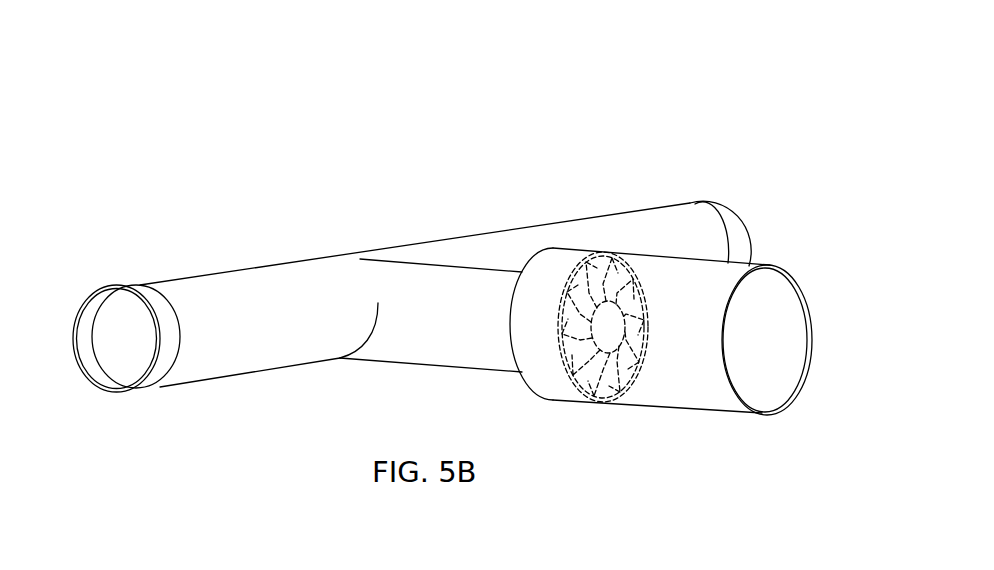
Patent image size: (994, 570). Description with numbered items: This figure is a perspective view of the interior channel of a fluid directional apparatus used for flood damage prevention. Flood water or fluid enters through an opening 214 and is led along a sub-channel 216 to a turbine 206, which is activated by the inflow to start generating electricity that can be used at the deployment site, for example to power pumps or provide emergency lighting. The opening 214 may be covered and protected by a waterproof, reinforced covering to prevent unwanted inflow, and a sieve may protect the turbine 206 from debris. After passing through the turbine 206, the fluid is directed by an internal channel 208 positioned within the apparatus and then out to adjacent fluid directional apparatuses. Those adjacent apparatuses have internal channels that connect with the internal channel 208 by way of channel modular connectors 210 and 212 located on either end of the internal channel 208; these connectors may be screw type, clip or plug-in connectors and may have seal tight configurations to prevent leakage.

The turbine 206 is at (633, 373).
The internal channel 208 is at (380, 247).
The channel modular connector 210 is at (113, 285).
The channel modular connector 212 is at (702, 203).
The opening 214 is at (777, 410).
The sub-channel 216 is at (697, 393).